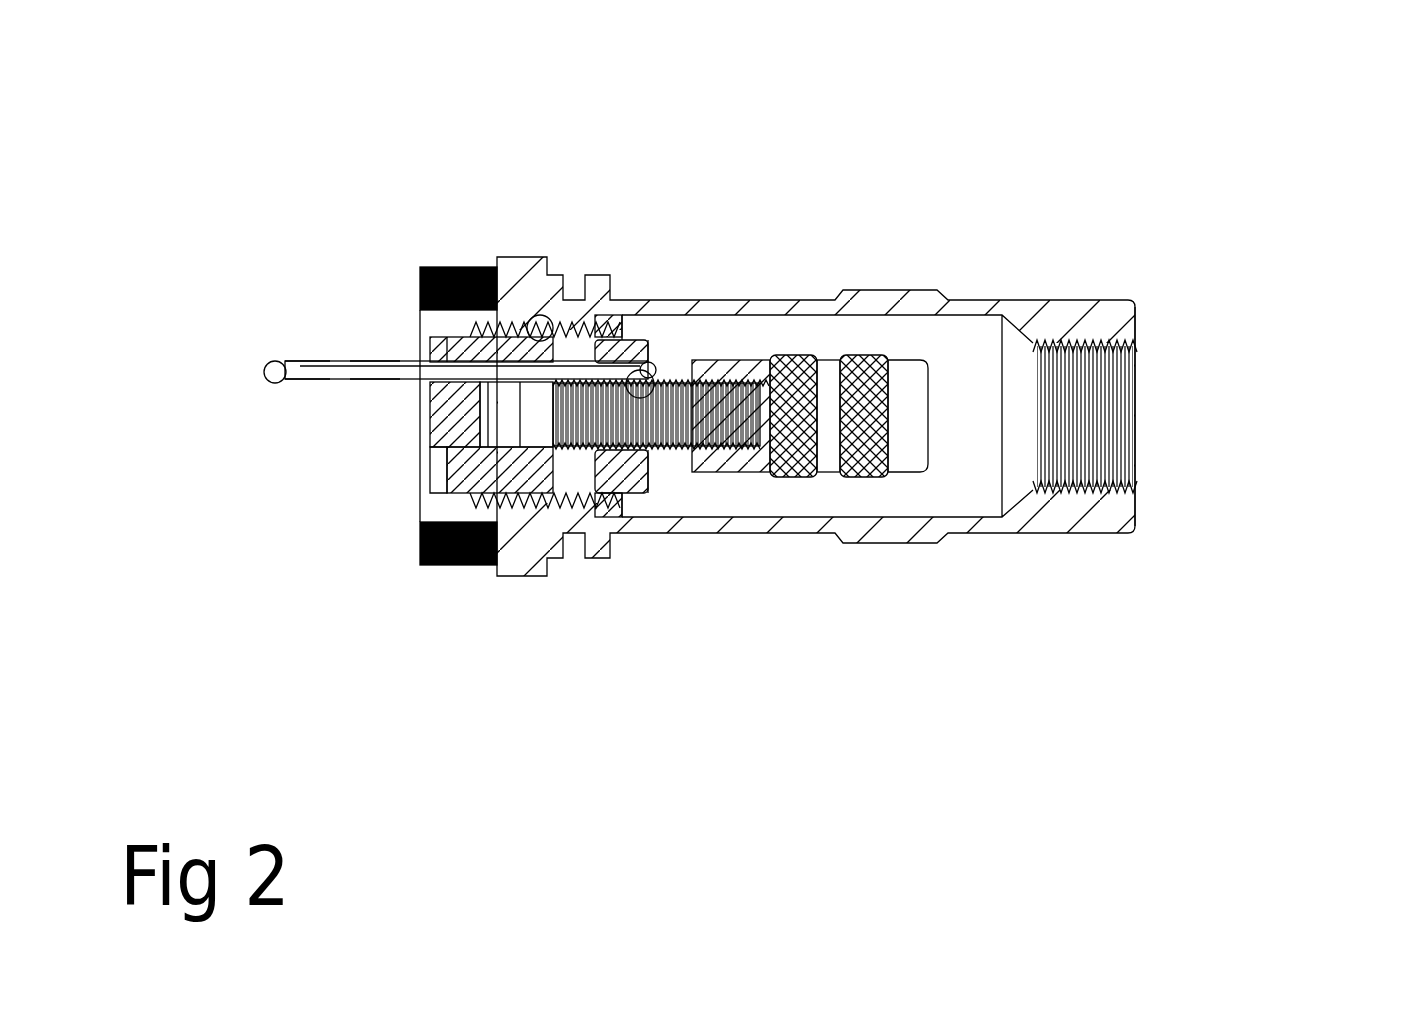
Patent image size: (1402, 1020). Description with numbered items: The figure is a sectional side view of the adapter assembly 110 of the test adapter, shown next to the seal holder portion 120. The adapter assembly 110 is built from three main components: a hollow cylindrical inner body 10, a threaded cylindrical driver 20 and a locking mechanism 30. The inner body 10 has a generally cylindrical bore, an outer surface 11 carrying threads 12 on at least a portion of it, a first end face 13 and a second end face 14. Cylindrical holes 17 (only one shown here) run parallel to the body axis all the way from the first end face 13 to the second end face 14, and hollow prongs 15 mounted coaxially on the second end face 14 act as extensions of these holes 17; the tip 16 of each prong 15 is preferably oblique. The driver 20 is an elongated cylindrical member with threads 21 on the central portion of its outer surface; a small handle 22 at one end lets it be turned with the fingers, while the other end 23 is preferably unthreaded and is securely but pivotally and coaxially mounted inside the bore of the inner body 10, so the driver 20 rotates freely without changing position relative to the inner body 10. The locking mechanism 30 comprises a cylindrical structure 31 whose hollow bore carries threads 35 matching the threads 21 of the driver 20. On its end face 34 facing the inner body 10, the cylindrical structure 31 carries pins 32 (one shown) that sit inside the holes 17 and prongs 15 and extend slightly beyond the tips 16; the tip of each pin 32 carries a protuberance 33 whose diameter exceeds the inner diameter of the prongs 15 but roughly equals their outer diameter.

The inner body 10 is at (420, 490).
The outer surface 11 is at (452, 314).
The threads 12 is at (540, 315).
The first end face 13 is at (547, 516).
The second end face 14 is at (450, 468).
The hollow prongs 15 is at (372, 360).
The tip 16 is at (290, 342).
The cylindrical holes 17 is at (585, 345).
The driver 20 is at (866, 505).
The threads 21 is at (662, 455).
The handle 22 is at (912, 373).
The other end 23 is at (500, 413).
The locking mechanism 30 is at (666, 514).
The cylindrical structure 31 is at (626, 490).
The pins 32 is at (600, 330).
The protuberance 33 is at (263, 390).
The end face 34 is at (580, 478).
The threads 35 is at (658, 340).
The adapter assembly 110 is at (1062, 436).
The seal holder portion 120 is at (1202, 278).